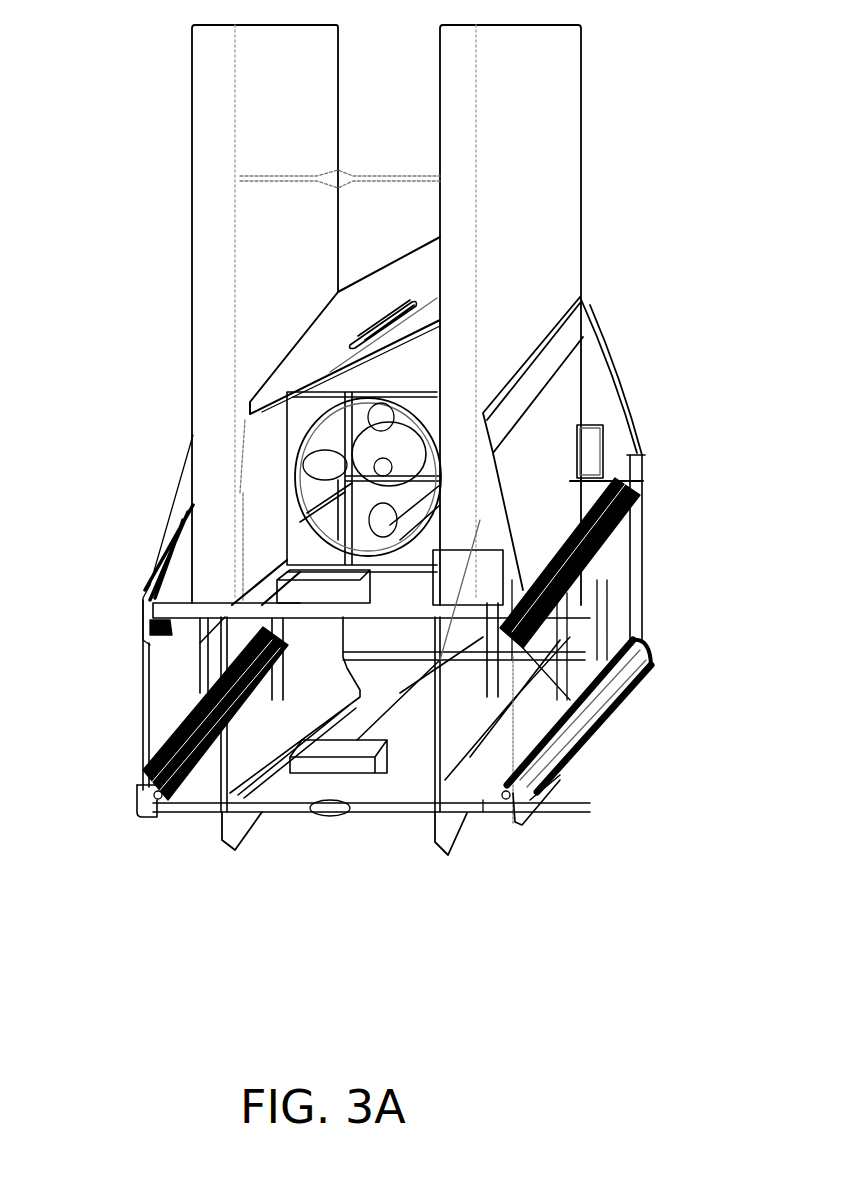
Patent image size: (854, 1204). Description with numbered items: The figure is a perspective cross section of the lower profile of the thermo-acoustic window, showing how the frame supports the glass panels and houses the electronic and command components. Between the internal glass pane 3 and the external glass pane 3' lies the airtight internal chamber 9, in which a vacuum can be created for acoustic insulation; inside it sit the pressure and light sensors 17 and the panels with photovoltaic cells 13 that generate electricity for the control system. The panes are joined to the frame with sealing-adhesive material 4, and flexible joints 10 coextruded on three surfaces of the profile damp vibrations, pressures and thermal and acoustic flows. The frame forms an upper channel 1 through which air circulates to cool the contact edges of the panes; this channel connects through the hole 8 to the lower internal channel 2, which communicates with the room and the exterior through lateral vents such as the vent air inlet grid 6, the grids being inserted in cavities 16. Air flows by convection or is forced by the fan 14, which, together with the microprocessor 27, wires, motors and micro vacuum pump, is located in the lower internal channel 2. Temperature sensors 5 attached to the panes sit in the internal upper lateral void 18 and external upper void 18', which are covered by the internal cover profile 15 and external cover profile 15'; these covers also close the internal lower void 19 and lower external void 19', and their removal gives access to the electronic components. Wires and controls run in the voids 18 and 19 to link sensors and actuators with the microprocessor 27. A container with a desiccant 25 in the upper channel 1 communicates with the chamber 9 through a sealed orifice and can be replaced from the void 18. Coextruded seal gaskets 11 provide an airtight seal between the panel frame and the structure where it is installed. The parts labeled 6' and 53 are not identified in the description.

The upper channel 1 is at (290, 420).
The lower internal channel 2 is at (353, 718).
The internal glass pane 3 is at (579, 315).
The external glass pane 3' is at (174, 314).
The sealing-adhesive material 4 is at (300, 548).
The temperature sensors 5 is at (297, 575).
The vent air inlet grid 6 is at (459, 713).
The post 6' is at (304, 707).
The hole 8 is at (270, 535).
The airtight internal chamber 9 is at (370, 138).
The flexible joints 10 is at (317, 181).
The coextruded seal gaskets 11 is at (445, 800).
The panels with photovoltaic cells 13 is at (348, 308).
The fan 14 is at (440, 465).
The internal cover profile 15 is at (606, 443).
The external cover profile 15' is at (98, 708).
The cavities 16 is at (605, 607).
The pressure and light sensors 17 is at (380, 338).
The internal upper lateral void 18 is at (485, 822).
The external upper void 18' is at (142, 827).
The internal lower void 19 is at (422, 702).
The lower external void 19' is at (176, 692).
The container with a desiccant 25 is at (225, 617).
The microprocessor 27 is at (373, 766).
The fastener 53 is at (560, 651).